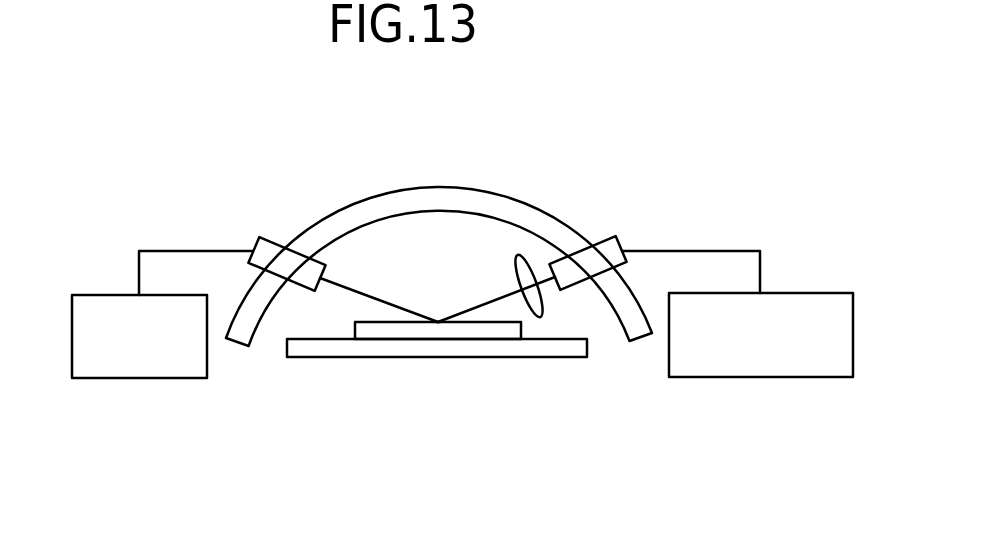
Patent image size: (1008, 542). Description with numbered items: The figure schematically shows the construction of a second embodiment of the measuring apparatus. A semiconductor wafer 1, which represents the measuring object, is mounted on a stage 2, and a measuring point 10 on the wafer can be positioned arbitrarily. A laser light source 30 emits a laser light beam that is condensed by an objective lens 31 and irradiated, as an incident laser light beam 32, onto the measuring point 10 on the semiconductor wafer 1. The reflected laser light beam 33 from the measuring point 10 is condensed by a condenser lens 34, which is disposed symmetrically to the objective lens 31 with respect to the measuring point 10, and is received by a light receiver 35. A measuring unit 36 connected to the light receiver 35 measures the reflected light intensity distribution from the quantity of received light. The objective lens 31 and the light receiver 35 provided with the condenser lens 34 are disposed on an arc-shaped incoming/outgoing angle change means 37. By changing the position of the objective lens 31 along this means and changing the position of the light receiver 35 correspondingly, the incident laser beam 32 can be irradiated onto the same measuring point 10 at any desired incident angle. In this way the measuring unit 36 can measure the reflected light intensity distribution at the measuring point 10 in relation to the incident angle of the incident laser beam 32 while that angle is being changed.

The semiconductor wafer 1 is at (352, 332).
The stage 2 is at (437, 358).
The measuring point 10 is at (438, 321).
The laser light source 30 is at (138, 380).
The objective lens 31 is at (275, 238).
The incident laser light beam 32 is at (385, 297).
The reflected laser light beam 33 is at (490, 293).
The condenser lens 34 is at (543, 303).
The light receiver 35 is at (603, 238).
The measuring unit 36 is at (758, 378).
The incoming/outgoing angle change means 37 is at (418, 190).